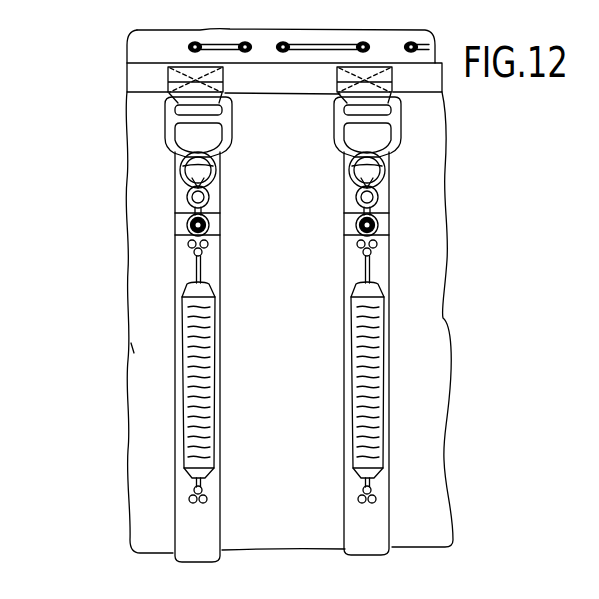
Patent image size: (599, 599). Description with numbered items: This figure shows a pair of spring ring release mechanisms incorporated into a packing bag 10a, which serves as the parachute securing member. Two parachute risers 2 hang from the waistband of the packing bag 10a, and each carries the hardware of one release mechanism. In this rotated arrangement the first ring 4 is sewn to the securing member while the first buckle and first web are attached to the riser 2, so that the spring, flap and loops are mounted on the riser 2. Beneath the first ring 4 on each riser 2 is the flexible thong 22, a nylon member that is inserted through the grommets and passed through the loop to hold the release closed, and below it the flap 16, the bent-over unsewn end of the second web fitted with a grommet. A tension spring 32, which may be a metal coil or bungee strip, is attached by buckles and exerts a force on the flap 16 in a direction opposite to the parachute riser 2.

The parachute riser 2 is at (187, 530).
The first ring 4 is at (175, 117).
The packing bag 10a is at (142, 358).
The flap 16 is at (185, 231).
The flexible thong 22 is at (186, 206).
The tension spring 32 is at (190, 449).